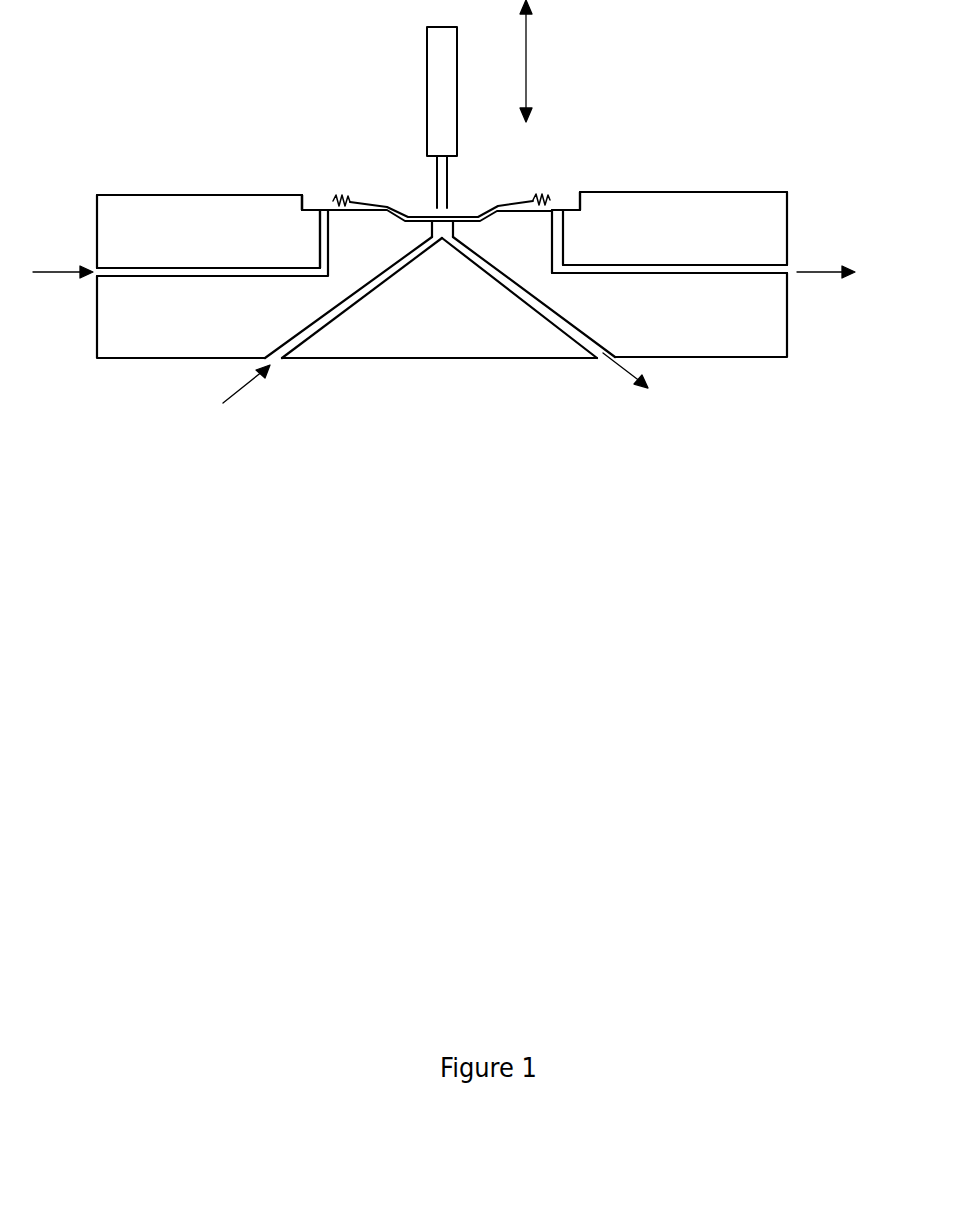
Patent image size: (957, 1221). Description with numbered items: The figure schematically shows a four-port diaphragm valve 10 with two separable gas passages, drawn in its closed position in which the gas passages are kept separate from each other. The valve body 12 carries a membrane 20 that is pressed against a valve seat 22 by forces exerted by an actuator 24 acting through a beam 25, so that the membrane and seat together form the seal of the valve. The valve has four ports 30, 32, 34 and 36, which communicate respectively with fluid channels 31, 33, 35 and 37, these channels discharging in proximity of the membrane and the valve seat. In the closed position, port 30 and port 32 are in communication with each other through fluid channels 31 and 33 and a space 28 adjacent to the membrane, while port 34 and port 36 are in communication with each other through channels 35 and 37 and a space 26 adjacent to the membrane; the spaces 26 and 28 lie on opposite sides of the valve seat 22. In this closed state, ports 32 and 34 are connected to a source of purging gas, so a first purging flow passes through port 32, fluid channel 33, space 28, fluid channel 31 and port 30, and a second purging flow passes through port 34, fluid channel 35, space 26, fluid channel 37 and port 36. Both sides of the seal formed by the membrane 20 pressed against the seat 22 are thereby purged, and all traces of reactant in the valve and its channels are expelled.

The valve 10 is at (812, 88).
The valve body 12 is at (788, 200).
The membrane 20 is at (365, 202).
The valve seat 22 is at (465, 225).
The actuator 24 is at (428, 57).
The beam 25 is at (437, 177).
The space 26 is at (310, 205).
The space 28 is at (437, 228).
The port 30 is at (605, 360).
The fluid channel 31 is at (565, 337).
The port 32 is at (275, 360).
The fluid channel 33 is at (328, 327).
The port 34 is at (93, 275).
The fluid channel 35 is at (137, 265).
The port 36 is at (788, 267).
The fluid channel 37 is at (735, 273).